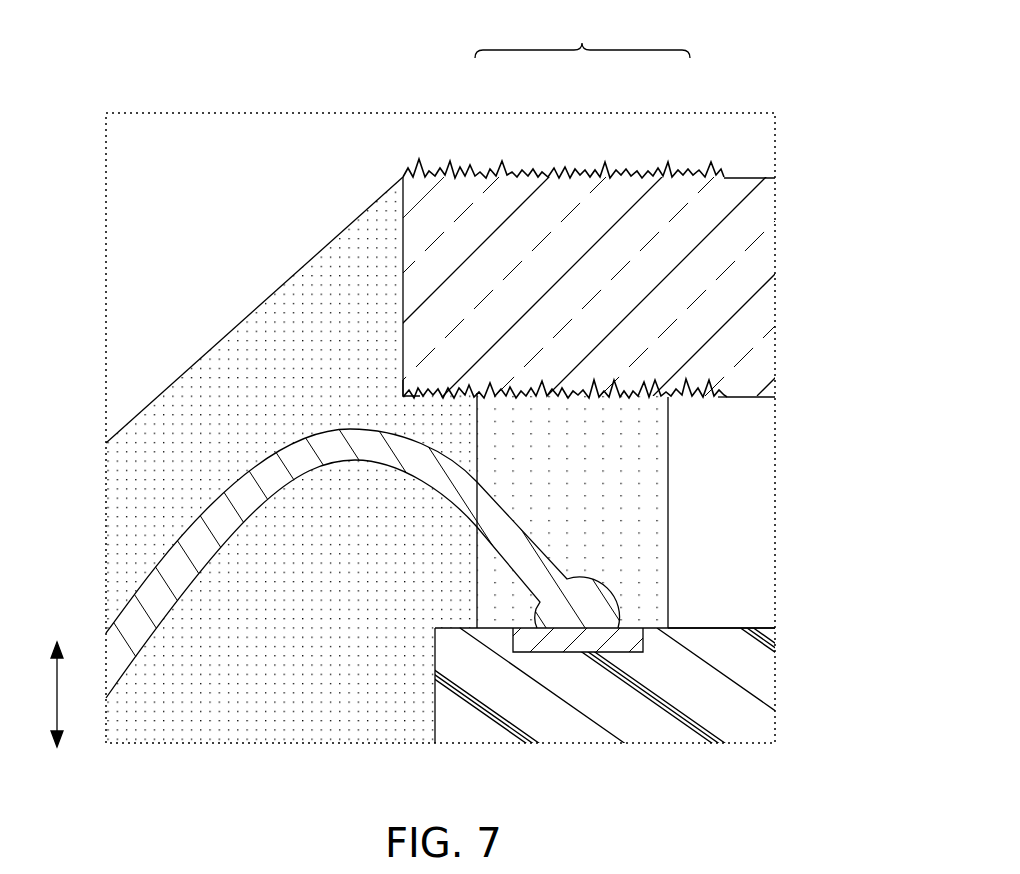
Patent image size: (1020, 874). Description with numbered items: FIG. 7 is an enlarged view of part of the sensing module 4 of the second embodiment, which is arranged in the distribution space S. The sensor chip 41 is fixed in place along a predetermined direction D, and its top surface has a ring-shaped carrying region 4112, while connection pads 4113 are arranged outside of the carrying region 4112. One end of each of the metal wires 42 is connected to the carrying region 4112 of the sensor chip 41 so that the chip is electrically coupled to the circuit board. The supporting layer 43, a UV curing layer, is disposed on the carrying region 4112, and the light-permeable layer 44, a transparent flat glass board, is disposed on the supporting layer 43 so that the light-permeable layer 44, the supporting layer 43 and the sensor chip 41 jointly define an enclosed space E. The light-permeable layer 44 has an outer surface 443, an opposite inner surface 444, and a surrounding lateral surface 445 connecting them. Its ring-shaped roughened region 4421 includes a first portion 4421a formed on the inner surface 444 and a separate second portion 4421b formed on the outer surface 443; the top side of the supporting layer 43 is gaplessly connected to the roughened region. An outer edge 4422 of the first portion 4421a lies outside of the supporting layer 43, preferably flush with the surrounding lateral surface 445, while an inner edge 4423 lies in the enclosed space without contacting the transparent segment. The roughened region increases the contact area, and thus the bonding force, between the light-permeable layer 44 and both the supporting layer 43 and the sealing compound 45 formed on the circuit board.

The sensing module 4 is at (242, 297).
The distribution space S is at (155, 182).
The predetermined direction D is at (42, 694).
The sensor chip 41 is at (768, 685).
The carrying region 4112 is at (737, 626).
The connection pads 4113 is at (568, 642).
The metal wires 42 is at (175, 553).
The supporting layer 43 is at (665, 570).
The light-permeable layer 44 is at (820, 282).
The ring-shaped roughened region 4421 is at (582, 36).
The first portion 4421a is at (587, 388).
The second portion 4421b is at (543, 172).
The outer edge 4422 is at (403, 402).
The inner edge 4423 is at (722, 400).
The outer surface 443 is at (747, 176).
The inner surface 444 is at (743, 398).
The surrounding lateral surface 445 is at (403, 243).
The sealing compound 45 is at (320, 262).
The enclosed space E is at (708, 594).